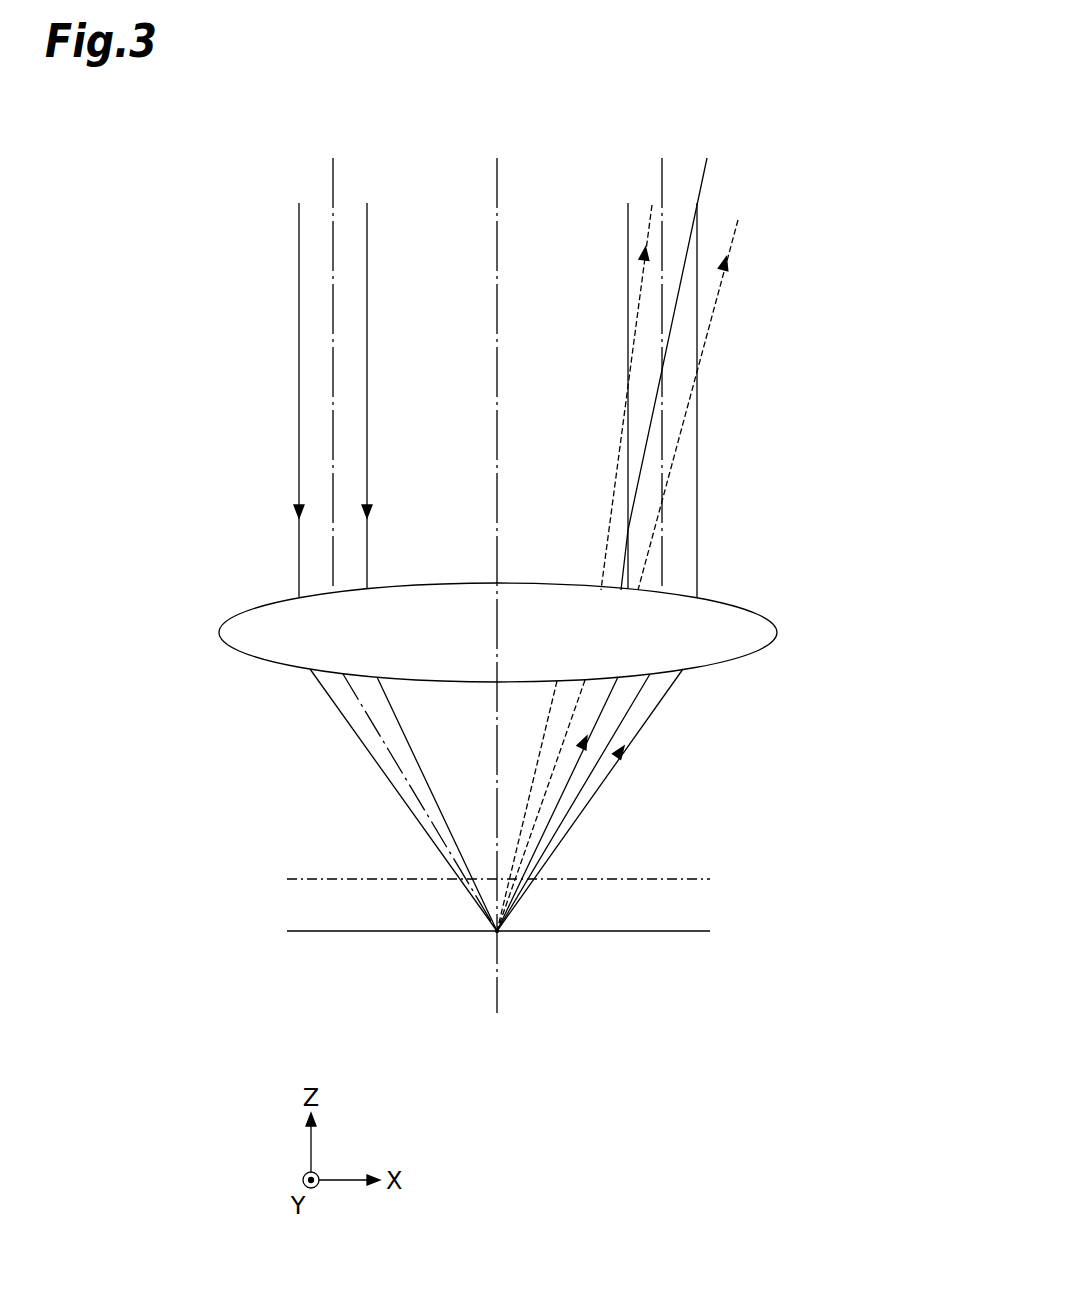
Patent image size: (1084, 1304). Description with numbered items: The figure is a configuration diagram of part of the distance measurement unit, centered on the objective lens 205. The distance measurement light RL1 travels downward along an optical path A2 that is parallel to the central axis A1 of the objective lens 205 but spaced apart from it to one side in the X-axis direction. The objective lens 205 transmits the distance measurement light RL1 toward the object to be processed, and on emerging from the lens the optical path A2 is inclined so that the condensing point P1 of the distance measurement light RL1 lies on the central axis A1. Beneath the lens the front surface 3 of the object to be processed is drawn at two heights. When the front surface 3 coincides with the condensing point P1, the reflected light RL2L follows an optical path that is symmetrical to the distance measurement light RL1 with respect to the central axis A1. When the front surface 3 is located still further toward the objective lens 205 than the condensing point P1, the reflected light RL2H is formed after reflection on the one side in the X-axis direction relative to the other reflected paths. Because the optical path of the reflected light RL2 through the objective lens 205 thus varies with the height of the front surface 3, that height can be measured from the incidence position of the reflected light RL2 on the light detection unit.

The objective lens 205 is at (219, 633).
The central axis of the objective lens A1 is at (497, 171).
The optical path of the distance measurement light A2 is at (333, 284).
The distance measurement light RL1 is at (299, 351).
The reflected light RL2 is at (890, 343).
The reflected light (high surface position) RL2H is at (712, 322).
The reflected light (surface at condensing point) RL2L is at (697, 422).
The front surface of the object to be processed 3 is at (305, 879).
The condensing point P1 is at (499, 933).